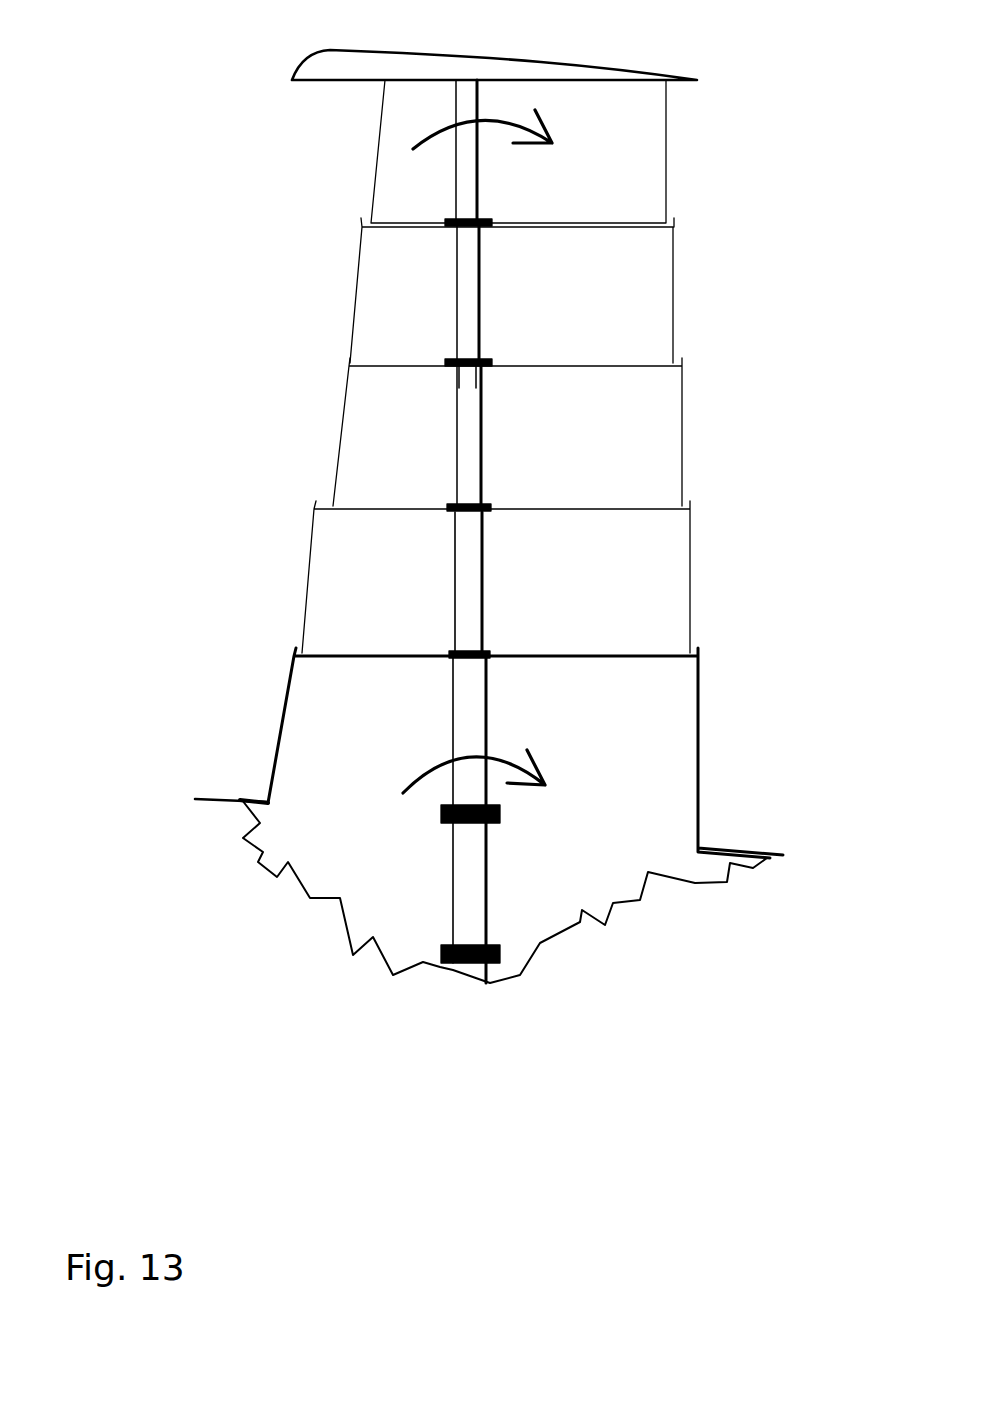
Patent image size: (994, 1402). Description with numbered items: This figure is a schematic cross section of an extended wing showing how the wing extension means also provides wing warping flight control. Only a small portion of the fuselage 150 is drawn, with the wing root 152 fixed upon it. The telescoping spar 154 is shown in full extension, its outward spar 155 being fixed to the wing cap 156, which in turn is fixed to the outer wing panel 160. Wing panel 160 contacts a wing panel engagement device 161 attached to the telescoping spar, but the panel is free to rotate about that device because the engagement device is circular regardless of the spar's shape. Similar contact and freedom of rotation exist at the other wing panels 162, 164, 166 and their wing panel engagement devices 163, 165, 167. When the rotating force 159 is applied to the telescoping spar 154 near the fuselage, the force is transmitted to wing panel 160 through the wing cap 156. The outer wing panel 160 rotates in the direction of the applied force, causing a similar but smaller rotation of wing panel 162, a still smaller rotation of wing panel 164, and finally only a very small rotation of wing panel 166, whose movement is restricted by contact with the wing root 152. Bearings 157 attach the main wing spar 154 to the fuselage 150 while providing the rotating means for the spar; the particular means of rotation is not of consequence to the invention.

The fuselage 150 is at (788, 858).
The wing root 152 is at (700, 690).
The telescoping spar 154 is at (495, 857).
The outward spar 155 is at (479, 173).
The wing cap 156 is at (553, 56).
The bearings 157 is at (443, 820).
The rotating force 159 is at (412, 150).
The wing panel 160 is at (668, 122).
The wing panel engagement device 161 is at (488, 228).
The wing panel 162 is at (677, 267).
The wing panel engagement device 163 is at (488, 372).
The wing panel 164 is at (682, 432).
The wing panel engagement device 165 is at (488, 512).
The wing panel 166 is at (690, 572).
The wing panel engagement device 167 is at (492, 663).